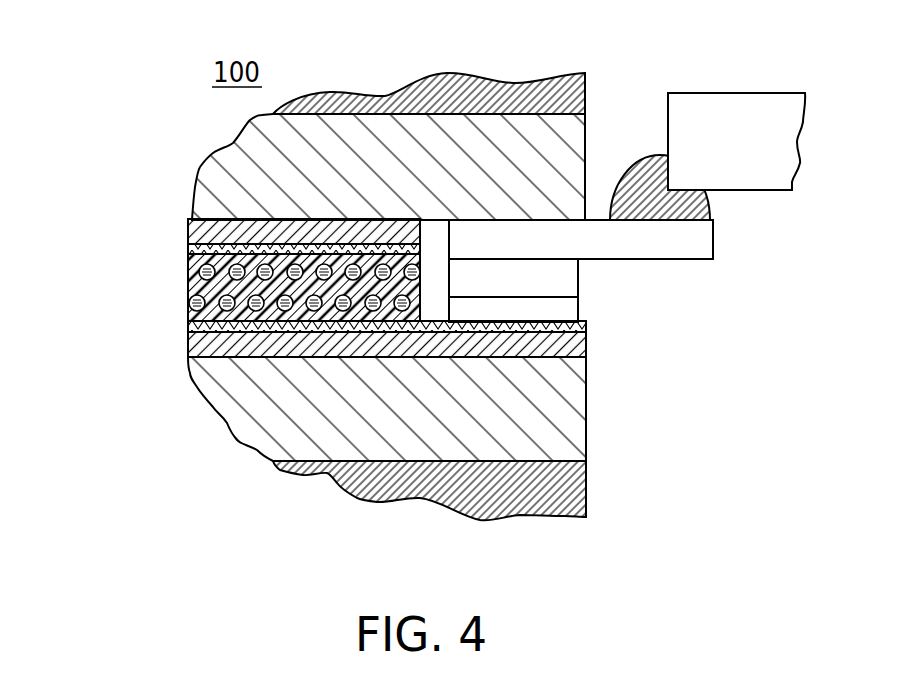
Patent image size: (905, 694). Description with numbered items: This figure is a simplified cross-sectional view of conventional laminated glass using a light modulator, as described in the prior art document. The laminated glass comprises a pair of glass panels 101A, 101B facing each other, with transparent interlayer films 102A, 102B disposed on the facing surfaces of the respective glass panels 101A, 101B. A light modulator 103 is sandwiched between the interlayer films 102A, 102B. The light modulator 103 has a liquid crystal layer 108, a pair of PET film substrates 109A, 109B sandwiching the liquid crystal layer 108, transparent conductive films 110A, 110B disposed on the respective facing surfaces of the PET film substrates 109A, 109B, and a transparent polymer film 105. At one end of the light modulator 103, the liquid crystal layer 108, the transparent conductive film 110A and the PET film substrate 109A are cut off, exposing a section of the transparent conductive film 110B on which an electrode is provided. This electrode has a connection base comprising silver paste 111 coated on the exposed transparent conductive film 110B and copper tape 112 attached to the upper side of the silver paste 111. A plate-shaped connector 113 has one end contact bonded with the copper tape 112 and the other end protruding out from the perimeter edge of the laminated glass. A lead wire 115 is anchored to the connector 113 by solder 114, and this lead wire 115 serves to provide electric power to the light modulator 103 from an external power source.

The glass panel 101A is at (587, 72).
The glass panel 101B is at (575, 493).
The transparent interlayer film 102A is at (577, 167).
The transparent interlayer film 102B is at (575, 429).
The light modulator 103 is at (377, 270).
The transparent polymer film 105 is at (266, 267).
The liquid crystal layer 108 is at (193, 262).
The PET film substrate 109A is at (188, 237).
The PET film substrate 109B is at (582, 350).
The transparent conductive film 110A is at (189, 250).
The transparent conductive film 110B is at (582, 327).
The silver paste 111 is at (573, 308).
The copper tape 112 is at (573, 273).
The connector 113 is at (705, 243).
The solder 114 is at (703, 208).
The lead wire 115 is at (757, 100).